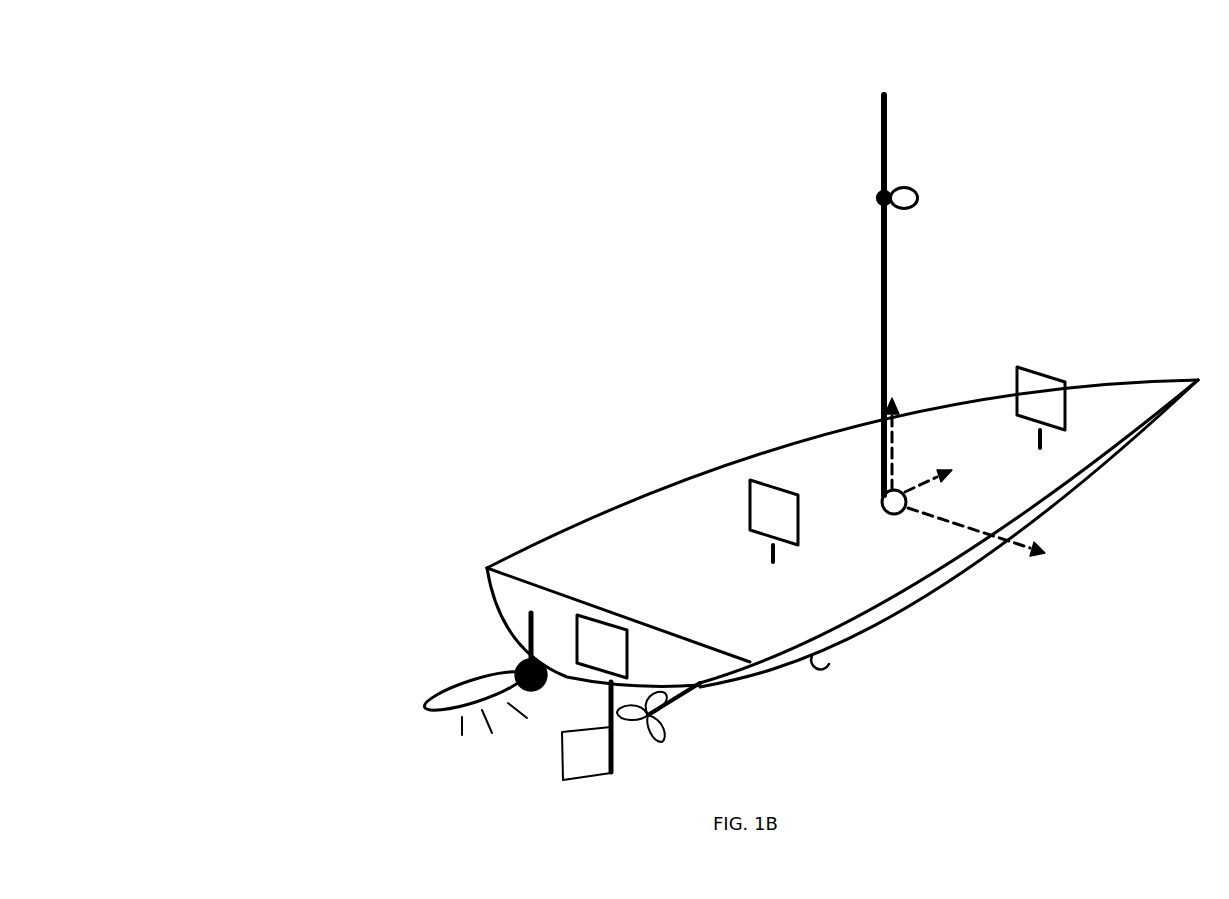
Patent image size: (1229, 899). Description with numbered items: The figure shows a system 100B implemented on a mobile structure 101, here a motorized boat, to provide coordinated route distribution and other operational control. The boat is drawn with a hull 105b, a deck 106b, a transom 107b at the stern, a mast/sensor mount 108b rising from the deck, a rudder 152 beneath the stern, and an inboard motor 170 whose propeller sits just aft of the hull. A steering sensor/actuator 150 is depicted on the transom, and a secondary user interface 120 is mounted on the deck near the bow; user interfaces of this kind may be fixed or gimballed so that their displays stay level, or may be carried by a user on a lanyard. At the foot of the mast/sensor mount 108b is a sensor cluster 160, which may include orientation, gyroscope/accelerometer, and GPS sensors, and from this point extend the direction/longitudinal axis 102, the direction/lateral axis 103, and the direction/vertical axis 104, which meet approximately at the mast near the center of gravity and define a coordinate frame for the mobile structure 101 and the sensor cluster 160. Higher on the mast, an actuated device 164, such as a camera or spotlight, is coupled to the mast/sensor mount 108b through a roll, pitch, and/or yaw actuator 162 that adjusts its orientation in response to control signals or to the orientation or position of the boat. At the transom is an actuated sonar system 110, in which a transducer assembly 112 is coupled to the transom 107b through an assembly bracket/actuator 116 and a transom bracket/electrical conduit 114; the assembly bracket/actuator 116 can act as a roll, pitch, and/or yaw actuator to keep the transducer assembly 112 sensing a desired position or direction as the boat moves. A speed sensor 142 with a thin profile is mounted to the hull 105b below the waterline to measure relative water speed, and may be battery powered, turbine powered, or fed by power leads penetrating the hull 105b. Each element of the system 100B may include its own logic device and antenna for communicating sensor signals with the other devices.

The system 100B is at (256, 88).
The mobile structure 101 is at (506, 526).
The direction/longitudinal axis 102 is at (880, 457).
The direction/lateral axis 103 is at (985, 532).
The direction/vertical axis 104 is at (892, 432).
The hull 105b is at (992, 555).
The deck 106b is at (1103, 440).
The transom 107b is at (515, 600).
The mast/sensor mount 108b is at (882, 133).
The actuated sonar system 110 is at (393, 628).
The transducer assembly 112 is at (433, 700).
The transom bracket/electrical conduit 114 is at (525, 632).
The assembly bracket/actuator 116 is at (517, 668).
The secondary user interface 120 is at (1015, 392).
The speed sensor 142 is at (820, 663).
The steering sensor/actuator 150 is at (602, 646).
The rudder 152 is at (597, 760).
The sensor cluster 160 is at (908, 494).
The actuator 162 is at (877, 197).
The actuated device 164 is at (918, 196).
The inboard motor 170 is at (695, 717).